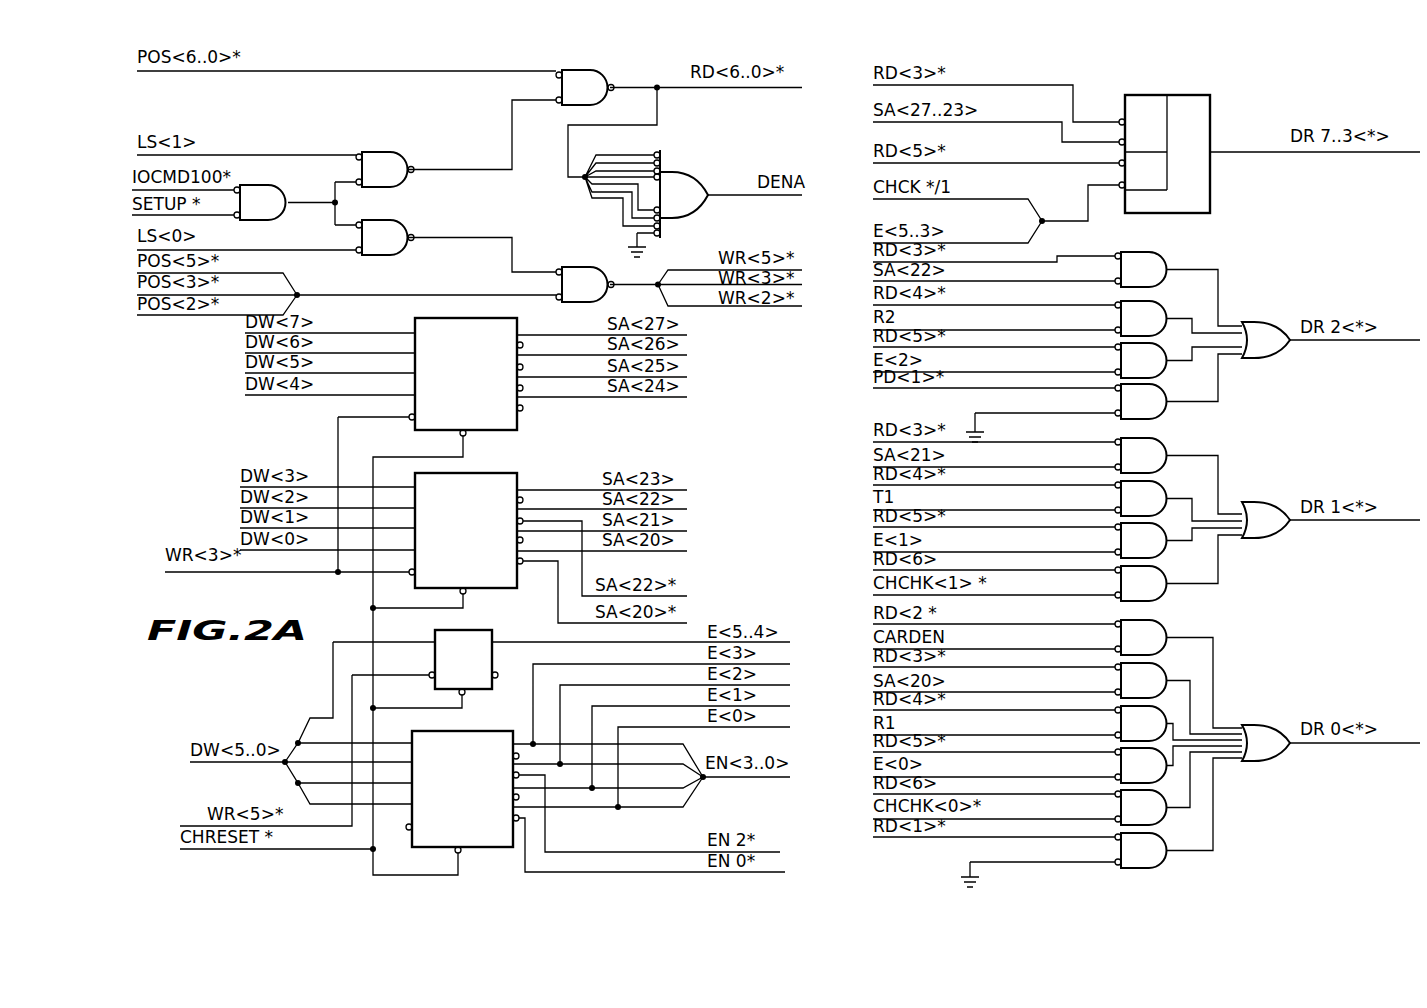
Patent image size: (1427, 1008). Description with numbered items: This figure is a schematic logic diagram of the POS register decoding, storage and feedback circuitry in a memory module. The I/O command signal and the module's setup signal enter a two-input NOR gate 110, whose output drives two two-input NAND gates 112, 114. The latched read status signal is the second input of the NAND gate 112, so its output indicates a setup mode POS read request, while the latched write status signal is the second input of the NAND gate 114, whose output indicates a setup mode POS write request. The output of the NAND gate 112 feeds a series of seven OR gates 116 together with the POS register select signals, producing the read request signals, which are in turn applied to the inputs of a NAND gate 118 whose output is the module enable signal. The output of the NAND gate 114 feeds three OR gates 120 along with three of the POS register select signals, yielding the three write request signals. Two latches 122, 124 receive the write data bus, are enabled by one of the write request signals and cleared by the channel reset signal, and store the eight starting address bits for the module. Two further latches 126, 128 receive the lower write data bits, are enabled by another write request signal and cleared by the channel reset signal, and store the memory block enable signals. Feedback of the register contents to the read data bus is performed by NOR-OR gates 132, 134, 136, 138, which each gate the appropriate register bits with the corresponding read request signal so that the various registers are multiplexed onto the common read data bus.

The NOR gate 110 is at (278, 186).
The NAND gate 112 is at (385, 152).
The NAND gate 114 is at (400, 222).
The OR gates 116 is at (592, 68).
The NAND gate 118 is at (690, 173).
The OR gates 120 is at (578, 266).
The latch 122 is at (512, 430).
The latch 124 is at (468, 473).
The latch 126 is at (478, 632).
The latch 128 is at (483, 731).
The NOR-OR gate 132 is at (1268, 761).
The NOR-OR gate 134 is at (1268, 538).
The NOR-OR gate 136 is at (1268, 358).
The NOR-OR gate 138 is at (1214, 192).